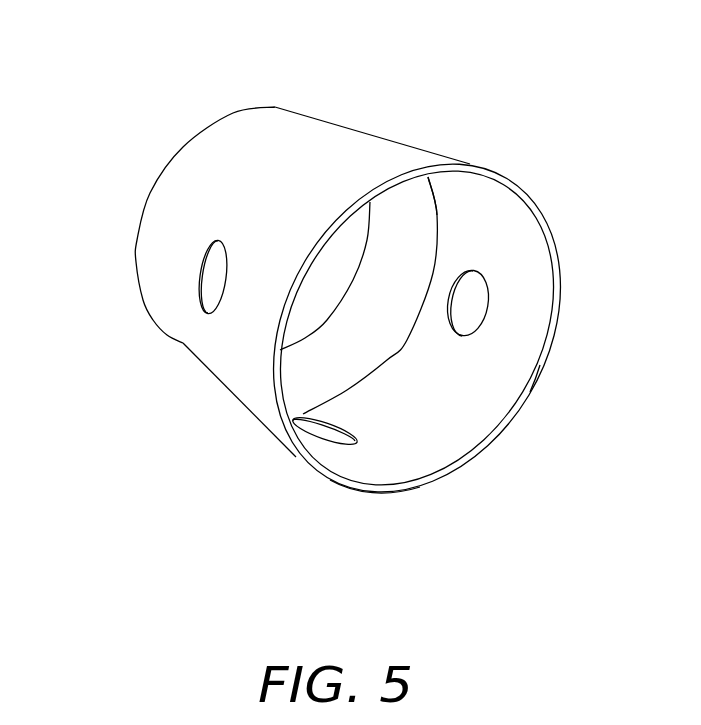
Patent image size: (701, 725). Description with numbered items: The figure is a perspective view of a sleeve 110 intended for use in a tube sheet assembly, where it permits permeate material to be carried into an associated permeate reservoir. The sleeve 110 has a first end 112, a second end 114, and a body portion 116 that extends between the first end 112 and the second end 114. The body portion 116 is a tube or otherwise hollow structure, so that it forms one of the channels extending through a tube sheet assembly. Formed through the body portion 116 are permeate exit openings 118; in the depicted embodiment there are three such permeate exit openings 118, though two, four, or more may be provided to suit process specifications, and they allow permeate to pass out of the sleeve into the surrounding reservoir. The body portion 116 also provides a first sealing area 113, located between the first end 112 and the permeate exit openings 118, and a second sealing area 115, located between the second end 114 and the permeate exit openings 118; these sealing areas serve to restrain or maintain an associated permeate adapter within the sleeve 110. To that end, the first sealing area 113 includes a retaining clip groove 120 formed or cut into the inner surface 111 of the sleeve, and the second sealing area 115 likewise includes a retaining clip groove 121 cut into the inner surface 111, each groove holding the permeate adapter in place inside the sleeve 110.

The sleeve 110 is at (333, 55).
The inner surface 111 is at (383, 470).
The first end 112 is at (446, 502).
The first sealing area 113 is at (468, 442).
The second end 114 is at (83, 147).
The second sealing area 115 is at (362, 314).
The body portion 116 is at (386, 137).
The permeate exit opening 118 is at (212, 305).
The retaining clip groove 120 is at (536, 377).
The retaining clip groove 121 is at (440, 216).